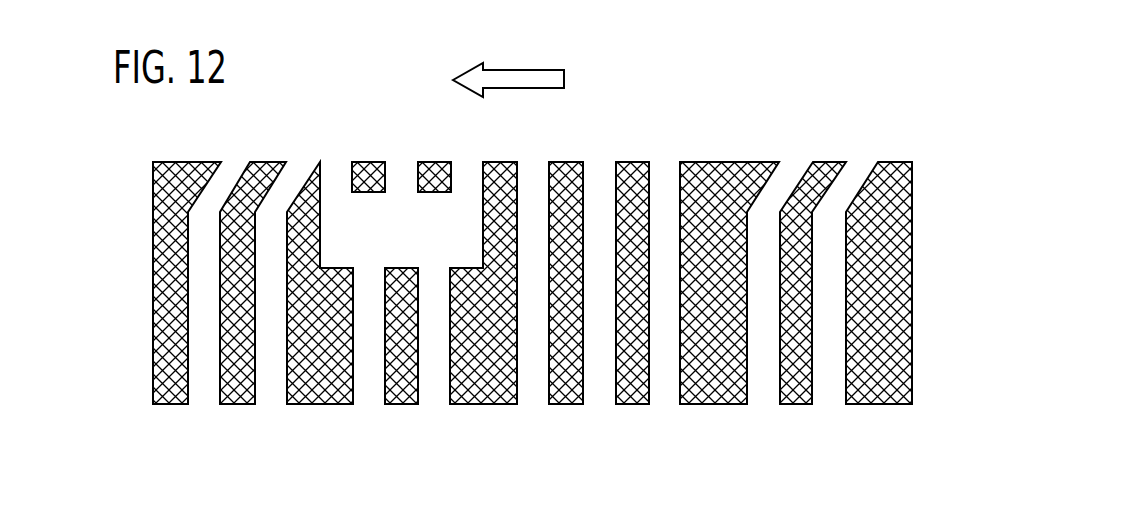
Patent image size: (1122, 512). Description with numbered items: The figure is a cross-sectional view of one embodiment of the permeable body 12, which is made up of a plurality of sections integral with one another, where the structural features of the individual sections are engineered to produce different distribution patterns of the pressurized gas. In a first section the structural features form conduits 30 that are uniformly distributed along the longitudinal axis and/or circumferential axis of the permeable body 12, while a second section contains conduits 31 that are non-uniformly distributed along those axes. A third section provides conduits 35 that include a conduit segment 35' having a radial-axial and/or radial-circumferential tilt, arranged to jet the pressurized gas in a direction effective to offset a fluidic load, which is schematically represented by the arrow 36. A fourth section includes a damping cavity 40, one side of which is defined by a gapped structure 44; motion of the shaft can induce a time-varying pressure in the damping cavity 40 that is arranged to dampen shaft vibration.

The permeable body 12 is at (502, 280).
The conduits 30 is at (533, 176).
The conduits 31 is at (664, 170).
The conduits 35 is at (159, 283).
The conduit segment 35' is at (189, 283).
The arrow 36 is at (533, 70).
The damping cavity 40 is at (414, 247).
The gapped structure 44 is at (366, 162).